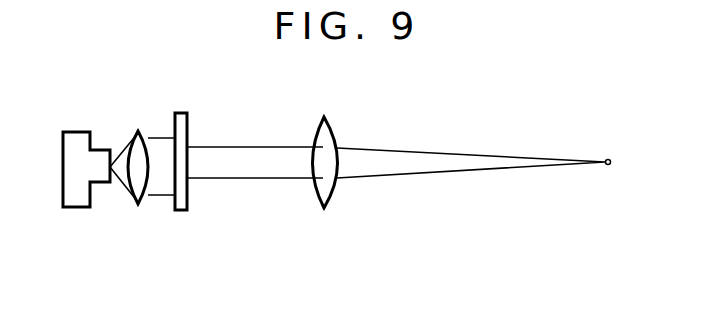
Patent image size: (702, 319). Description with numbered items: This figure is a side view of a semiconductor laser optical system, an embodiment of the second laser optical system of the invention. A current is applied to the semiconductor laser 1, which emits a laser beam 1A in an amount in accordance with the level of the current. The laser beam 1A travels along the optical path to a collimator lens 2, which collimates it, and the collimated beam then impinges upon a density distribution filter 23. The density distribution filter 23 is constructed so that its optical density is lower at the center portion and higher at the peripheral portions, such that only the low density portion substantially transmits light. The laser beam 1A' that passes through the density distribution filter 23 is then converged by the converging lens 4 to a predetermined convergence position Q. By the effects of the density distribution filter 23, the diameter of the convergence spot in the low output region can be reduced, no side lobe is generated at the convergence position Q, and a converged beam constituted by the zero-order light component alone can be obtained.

The semiconductor laser 1 is at (70, 131).
The laser beam 1A is at (116, 141).
The collimator lens 2 is at (140, 130).
The density distribution filter 23 is at (188, 121).
The laser beam passing through the density distribution filter 1A' is at (255, 187).
The converging lens 4 is at (333, 137).
The convergence position Q is at (610, 158).